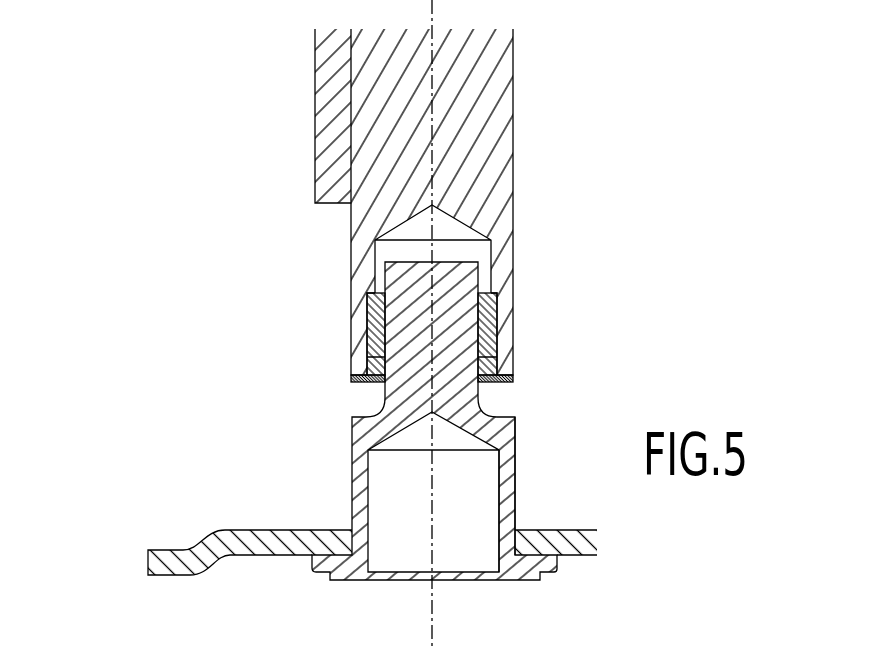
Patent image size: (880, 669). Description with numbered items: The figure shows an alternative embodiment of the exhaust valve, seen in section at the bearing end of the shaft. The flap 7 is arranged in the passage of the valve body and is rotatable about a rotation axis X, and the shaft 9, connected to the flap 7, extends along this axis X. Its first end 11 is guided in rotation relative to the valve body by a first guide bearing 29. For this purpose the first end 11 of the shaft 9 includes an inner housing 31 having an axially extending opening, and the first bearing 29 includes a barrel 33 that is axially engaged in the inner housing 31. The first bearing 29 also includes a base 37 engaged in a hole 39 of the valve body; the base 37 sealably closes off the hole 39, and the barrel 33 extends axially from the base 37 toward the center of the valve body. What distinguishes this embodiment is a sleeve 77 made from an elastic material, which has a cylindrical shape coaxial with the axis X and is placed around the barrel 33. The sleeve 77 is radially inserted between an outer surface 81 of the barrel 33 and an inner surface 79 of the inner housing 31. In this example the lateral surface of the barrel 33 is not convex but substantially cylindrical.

The flap 7 is at (330, 115).
The shaft 9 is at (514, 102).
The first end 11 is at (528, 303).
The first guide bearing 29 is at (336, 487).
The inner housing 31 is at (485, 250).
The barrel 33 is at (457, 337).
The base 37 is at (503, 497).
The hole 39 is at (530, 545).
The sleeve 77 is at (375, 310).
The inner surface 79 is at (375, 330).
The outer surface 81 is at (370, 358).
The rotation axis X is at (432, 615).